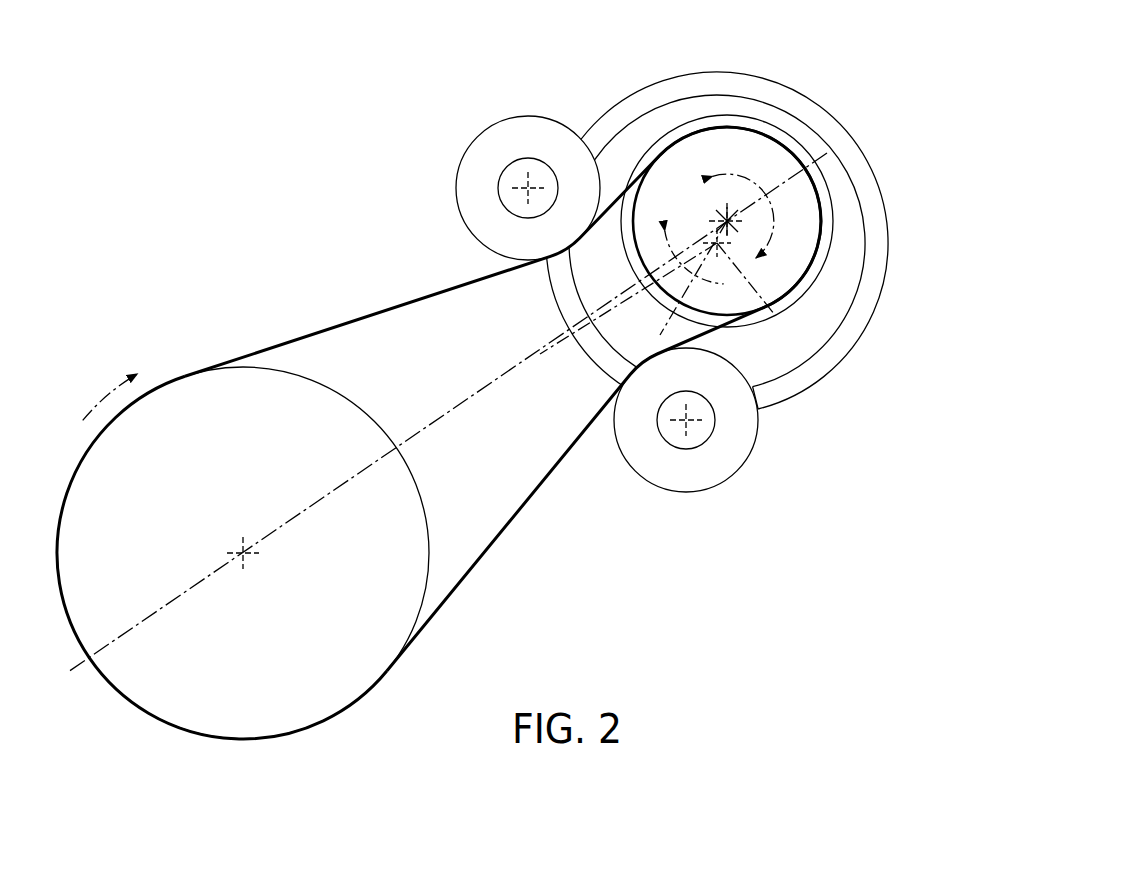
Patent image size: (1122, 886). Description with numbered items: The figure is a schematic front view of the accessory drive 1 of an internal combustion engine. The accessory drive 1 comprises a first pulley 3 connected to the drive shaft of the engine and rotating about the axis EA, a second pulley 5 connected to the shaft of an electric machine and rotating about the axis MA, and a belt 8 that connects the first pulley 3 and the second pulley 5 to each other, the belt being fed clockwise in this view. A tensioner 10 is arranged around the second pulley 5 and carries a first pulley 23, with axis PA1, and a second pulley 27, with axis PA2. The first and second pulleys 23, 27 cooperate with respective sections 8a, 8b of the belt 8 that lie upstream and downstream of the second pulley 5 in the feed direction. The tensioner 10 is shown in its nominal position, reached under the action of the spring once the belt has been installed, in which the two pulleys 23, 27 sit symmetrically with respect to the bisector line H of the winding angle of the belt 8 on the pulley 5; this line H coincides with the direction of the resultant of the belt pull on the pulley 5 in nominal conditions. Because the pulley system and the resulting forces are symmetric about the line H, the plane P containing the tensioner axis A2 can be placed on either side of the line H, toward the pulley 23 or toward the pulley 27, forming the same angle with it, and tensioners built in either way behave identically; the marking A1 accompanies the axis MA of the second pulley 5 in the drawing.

The accessory drive 1 is at (517, 398).
The first pulley 3 is at (290, 712).
The second pulley 5 is at (804, 204).
The belt 8 is at (439, 433).
The belt section 8a is at (305, 336).
The belt section 8b is at (548, 478).
The tensioner 10 is at (784, 78).
The first pulley of the tensioner 23 is at (487, 148).
The second pulley of the tensioner 27 is at (722, 466).
The axis of the first tensioner pulley PA1 is at (526, 189).
The axis of the second tensioner pulley PA2 is at (686, 420).
The axis of the first pulley EA is at (247, 556).
The axis of the second pulley MA is at (742, 228).
The first axis A1 is at (961, 299).
The tensioner axis A2 is at (845, 330).
The plane P is at (717, 243).
The bisector line H is at (508, 364).